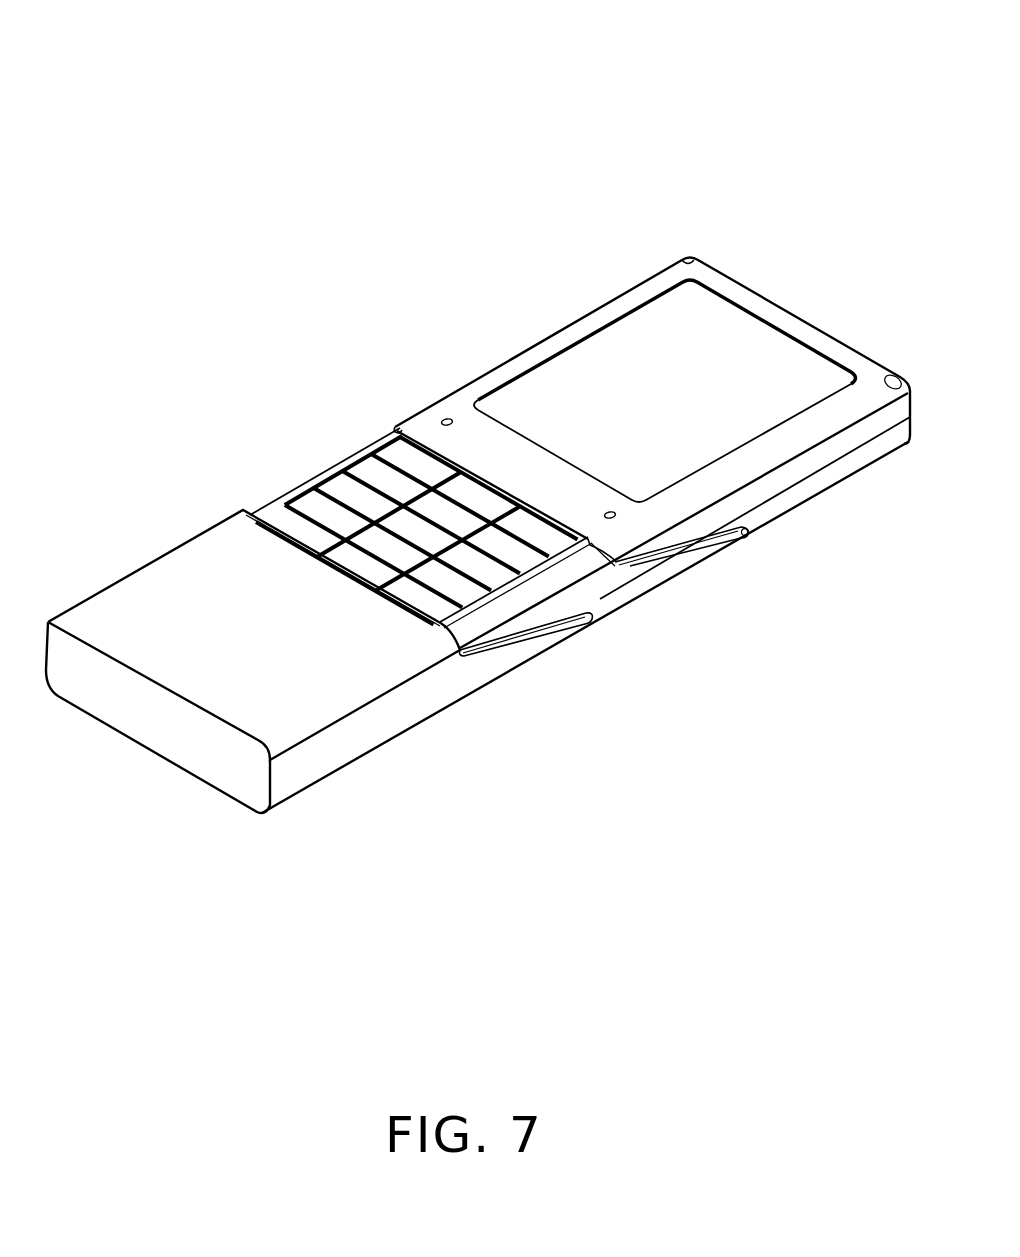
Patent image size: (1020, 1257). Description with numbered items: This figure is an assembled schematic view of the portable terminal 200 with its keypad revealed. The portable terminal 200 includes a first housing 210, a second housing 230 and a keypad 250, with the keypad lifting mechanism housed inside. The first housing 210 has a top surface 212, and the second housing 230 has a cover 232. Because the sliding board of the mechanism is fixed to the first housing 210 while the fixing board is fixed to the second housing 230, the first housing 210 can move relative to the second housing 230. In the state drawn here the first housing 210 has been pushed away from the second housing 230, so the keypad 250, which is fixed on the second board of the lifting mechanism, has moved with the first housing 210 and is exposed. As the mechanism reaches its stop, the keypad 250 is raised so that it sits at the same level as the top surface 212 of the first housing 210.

The portable terminal 200 is at (345, 52).
The first housing 210 is at (785, 322).
The top surface 212 is at (475, 442).
The second housing 230 is at (207, 743).
The cover 232 is at (140, 588).
The keypad 250 is at (288, 520).